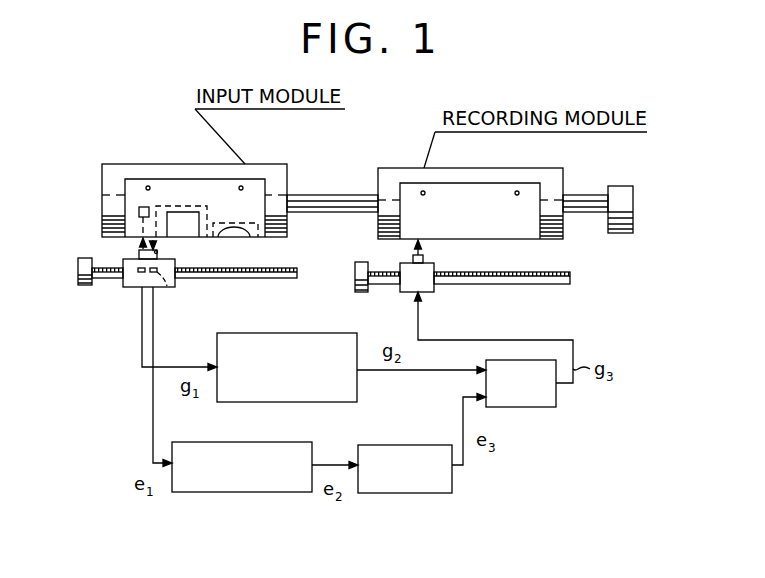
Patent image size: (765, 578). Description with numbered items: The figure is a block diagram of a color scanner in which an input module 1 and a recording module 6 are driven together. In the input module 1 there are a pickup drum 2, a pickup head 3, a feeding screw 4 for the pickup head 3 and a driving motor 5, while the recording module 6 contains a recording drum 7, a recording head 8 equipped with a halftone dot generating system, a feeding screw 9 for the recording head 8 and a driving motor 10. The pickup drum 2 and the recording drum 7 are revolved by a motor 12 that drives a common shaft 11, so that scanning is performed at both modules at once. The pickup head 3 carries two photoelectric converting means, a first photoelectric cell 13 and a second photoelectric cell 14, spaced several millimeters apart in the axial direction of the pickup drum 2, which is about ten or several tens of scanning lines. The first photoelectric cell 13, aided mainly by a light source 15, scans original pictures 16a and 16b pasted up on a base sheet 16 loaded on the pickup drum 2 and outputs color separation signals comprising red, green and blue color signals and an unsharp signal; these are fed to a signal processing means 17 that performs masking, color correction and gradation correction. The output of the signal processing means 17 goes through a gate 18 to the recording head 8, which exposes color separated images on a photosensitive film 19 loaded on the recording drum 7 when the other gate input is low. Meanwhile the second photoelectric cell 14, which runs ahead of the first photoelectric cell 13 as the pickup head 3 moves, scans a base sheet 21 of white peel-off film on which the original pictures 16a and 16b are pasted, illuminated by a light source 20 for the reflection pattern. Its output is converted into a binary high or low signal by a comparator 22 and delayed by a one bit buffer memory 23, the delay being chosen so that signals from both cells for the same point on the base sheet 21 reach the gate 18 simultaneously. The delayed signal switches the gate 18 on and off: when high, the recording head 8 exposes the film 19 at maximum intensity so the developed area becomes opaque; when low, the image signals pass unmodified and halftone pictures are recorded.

The input module 1 is at (118, 155).
The pickup drum 2 is at (288, 170).
The pickup head 3 is at (158, 290).
The feeding screw 4 is at (272, 280).
The driving motor 5 is at (81, 270).
The recording module 6 is at (395, 162).
The recording drum 7 is at (560, 180).
The recording head 8 is at (440, 288).
The feeding screw 9 is at (541, 284).
The driving motor 10 is at (365, 292).
The common shaft 11 is at (338, 204).
The motor 12 is at (615, 233).
The first photoelectric cell 13 is at (140, 272).
The second photoelectric cell 14 is at (165, 286).
The light source 15 is at (143, 206).
The base sheet 16 is at (120, 205).
The original picture 16a is at (186, 206).
The original picture 16b is at (255, 238).
The signal processing means 17 is at (318, 333).
The gate 18 is at (558, 390).
The photosensitive film 19 is at (535, 233).
The light source 20 is at (158, 252).
The base sheet 21 is at (130, 188).
The comparator 22 is at (285, 492).
The one bit buffer memory 23 is at (437, 493).